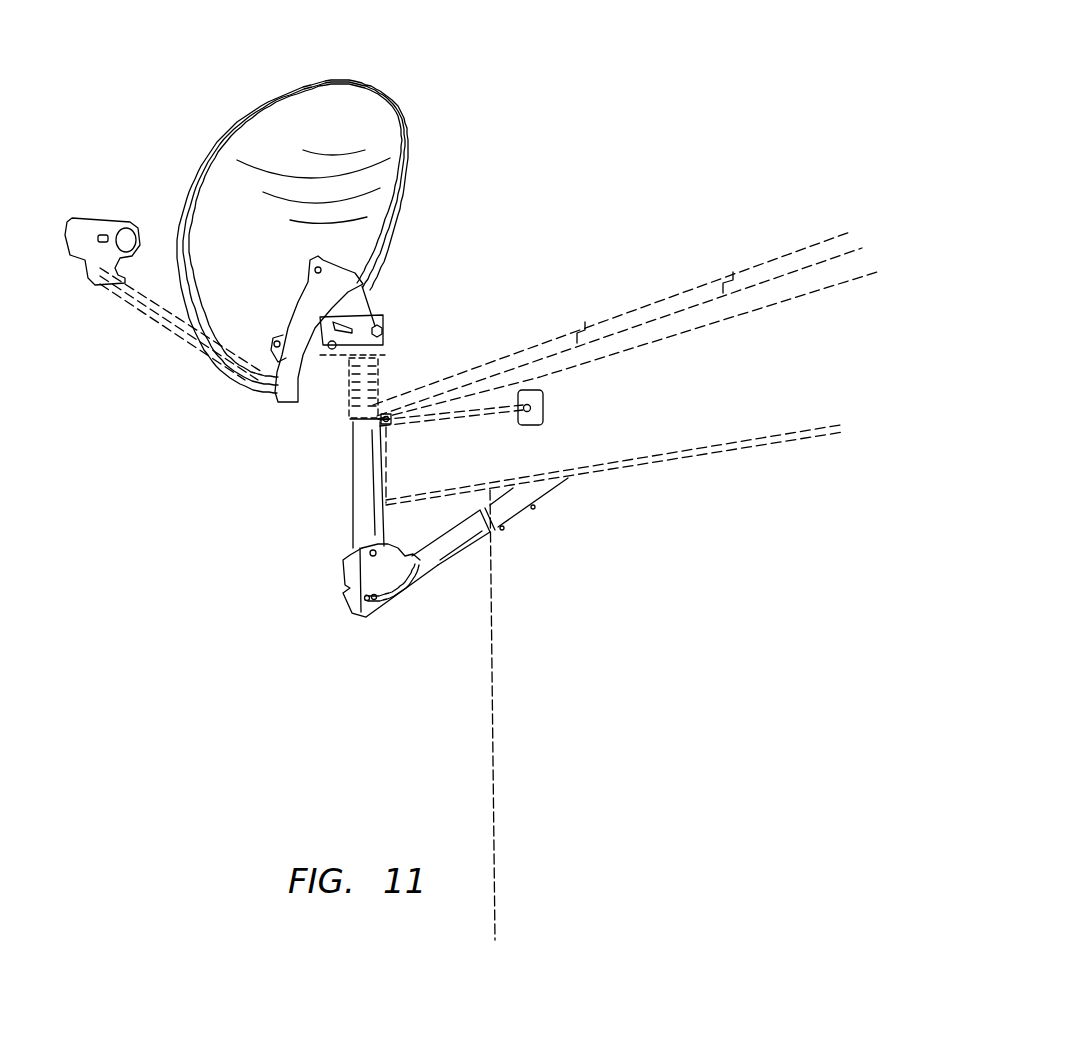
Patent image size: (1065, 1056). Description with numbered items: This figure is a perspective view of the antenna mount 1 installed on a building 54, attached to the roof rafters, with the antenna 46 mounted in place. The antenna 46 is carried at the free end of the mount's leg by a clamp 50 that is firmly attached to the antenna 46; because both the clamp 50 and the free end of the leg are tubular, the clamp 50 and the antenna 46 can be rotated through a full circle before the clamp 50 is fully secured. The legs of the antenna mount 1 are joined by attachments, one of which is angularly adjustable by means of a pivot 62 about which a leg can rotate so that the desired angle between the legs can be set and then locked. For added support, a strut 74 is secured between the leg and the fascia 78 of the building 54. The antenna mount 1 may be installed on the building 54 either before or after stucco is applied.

The antenna mount 1 is at (338, 515).
The antenna 46 is at (407, 92).
The clamp 50 is at (338, 395).
The building 54 is at (462, 693).
The pivot 62 is at (753, 463).
The strut 74 is at (470, 410).
The fascia 78 is at (708, 387).